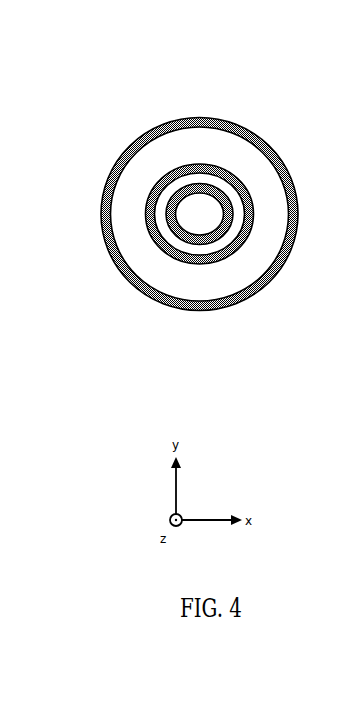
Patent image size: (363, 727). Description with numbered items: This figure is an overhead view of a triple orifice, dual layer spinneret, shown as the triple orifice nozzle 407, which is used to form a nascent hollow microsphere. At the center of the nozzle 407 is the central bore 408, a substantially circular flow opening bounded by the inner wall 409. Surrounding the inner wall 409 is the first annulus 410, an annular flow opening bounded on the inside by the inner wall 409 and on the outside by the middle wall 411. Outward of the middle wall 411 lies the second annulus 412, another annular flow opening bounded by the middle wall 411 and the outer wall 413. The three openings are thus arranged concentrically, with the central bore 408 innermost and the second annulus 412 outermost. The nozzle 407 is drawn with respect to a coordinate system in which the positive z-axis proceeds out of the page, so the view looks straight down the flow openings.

The triple orifice nozzle 407 is at (103, 103).
The central bore 408 is at (199, 213).
The inner wall 409 is at (226, 213).
The first annulus 410 is at (232, 234).
The middle wall 411 is at (239, 247).
The second annulus 412 is at (160, 273).
The outer wall 413 is at (129, 281).